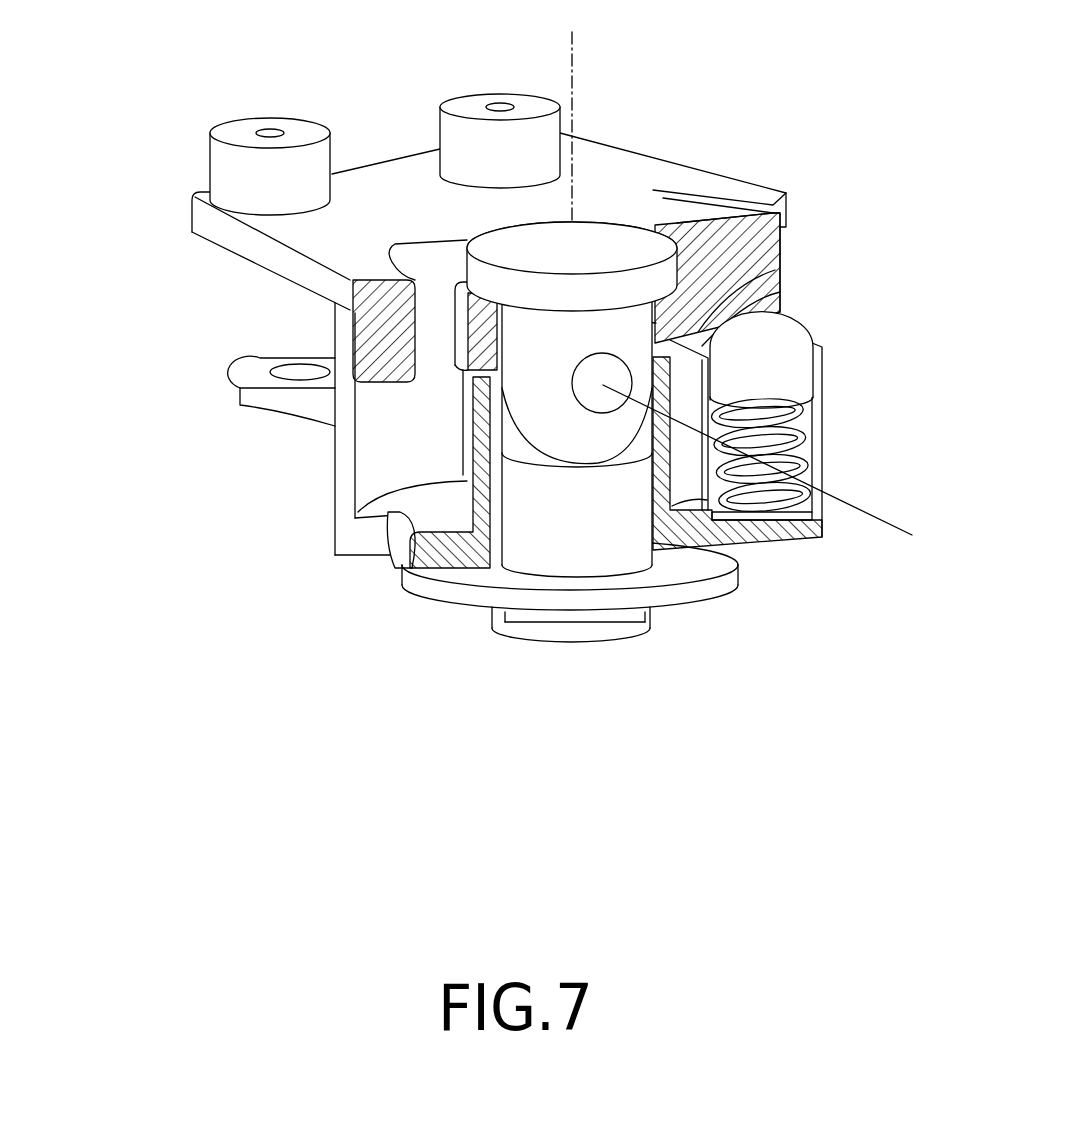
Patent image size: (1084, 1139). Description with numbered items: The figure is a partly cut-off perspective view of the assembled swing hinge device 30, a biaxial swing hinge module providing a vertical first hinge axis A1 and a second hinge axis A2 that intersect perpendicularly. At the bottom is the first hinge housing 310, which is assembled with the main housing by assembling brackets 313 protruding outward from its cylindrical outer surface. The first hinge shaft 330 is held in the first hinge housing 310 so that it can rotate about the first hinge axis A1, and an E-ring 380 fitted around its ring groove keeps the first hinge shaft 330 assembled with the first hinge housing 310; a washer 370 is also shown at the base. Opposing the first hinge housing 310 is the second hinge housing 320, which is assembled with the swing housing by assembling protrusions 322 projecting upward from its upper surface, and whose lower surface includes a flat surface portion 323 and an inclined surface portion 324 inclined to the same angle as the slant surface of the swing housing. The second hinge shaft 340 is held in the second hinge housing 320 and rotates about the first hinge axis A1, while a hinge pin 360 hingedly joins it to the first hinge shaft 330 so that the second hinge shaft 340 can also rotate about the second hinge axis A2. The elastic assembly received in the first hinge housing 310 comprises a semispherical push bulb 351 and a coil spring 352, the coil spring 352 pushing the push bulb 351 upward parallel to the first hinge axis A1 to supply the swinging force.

The swing hinge device 30 is at (82, 283).
The first hinge housing 310 is at (501, 435).
The assembling brackets 313 is at (267, 405).
The second hinge housing 320 is at (486, 238).
The assembling protrusions 322 is at (217, 160).
The flat surface portion 323 is at (378, 357).
The inclined surface portion 324 is at (778, 288).
The first hinge shaft 330 is at (572, 489).
The second hinge shaft 340 is at (768, 279).
The push bulb 351 is at (790, 340).
The coil spring 352 is at (810, 453).
The hinge pin 360 is at (603, 388).
The washer 370 is at (728, 578).
The E-ring 380 is at (533, 632).
The first hinge axis A1 is at (575, 53).
The second hinge axis A2 is at (893, 523).